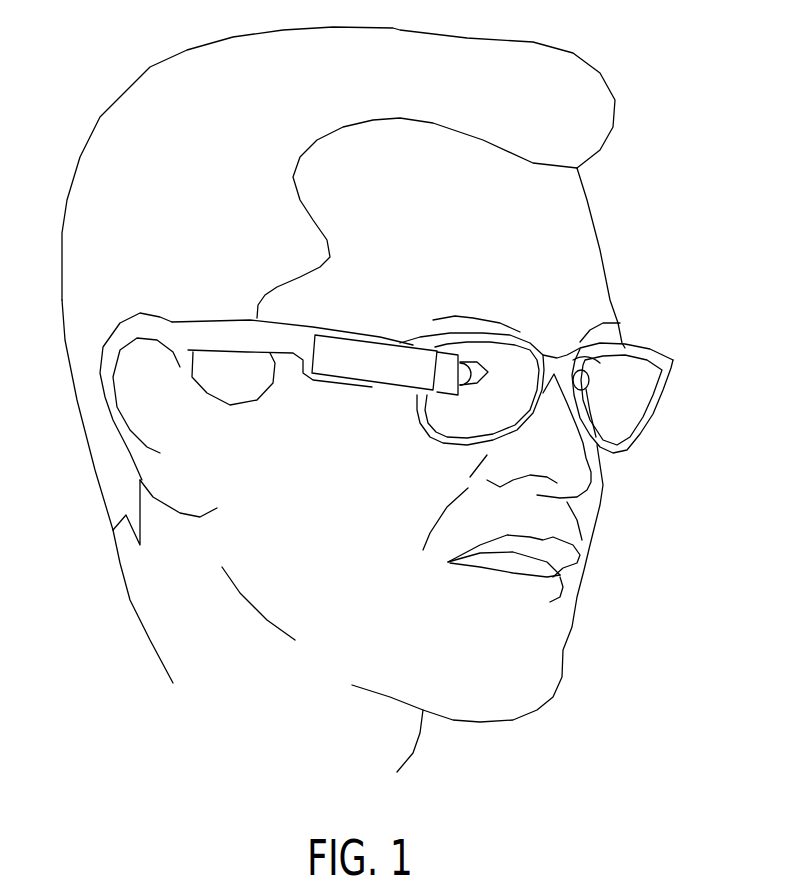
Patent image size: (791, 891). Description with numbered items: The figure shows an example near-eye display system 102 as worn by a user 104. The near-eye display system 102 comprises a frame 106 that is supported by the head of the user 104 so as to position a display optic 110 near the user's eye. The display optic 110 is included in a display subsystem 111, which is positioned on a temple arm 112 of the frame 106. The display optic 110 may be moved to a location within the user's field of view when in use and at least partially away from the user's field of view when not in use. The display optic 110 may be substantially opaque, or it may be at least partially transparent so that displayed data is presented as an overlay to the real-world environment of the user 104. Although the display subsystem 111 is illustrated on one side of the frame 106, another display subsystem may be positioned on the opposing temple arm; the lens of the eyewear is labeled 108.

The near-eye display system 102 is at (446, 388).
The user 104 is at (118, 101).
The frame 106 is at (633, 349).
The lens 108 is at (637, 463).
The display optic 110 is at (443, 388).
The display subsystem 111 is at (368, 386).
The temple arm 112 is at (307, 328).